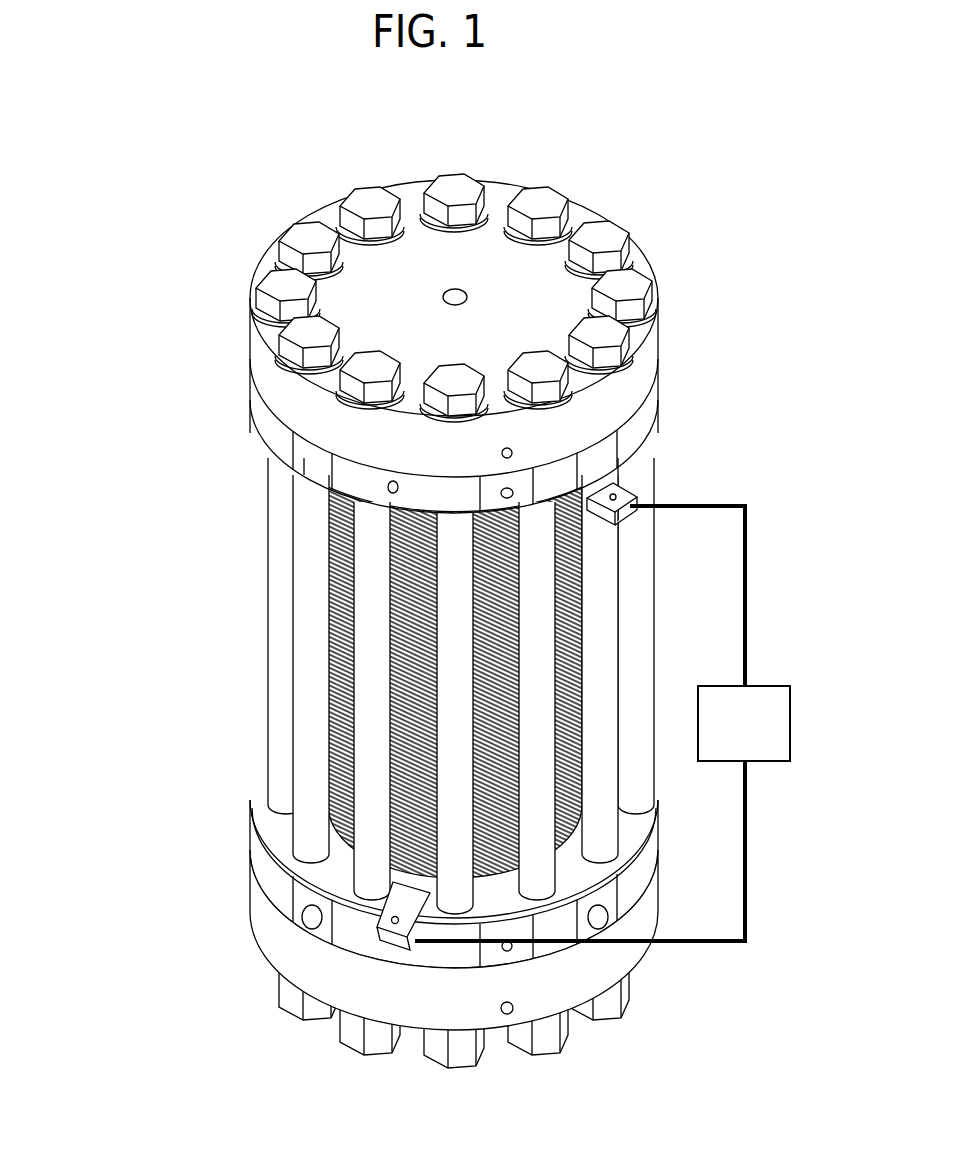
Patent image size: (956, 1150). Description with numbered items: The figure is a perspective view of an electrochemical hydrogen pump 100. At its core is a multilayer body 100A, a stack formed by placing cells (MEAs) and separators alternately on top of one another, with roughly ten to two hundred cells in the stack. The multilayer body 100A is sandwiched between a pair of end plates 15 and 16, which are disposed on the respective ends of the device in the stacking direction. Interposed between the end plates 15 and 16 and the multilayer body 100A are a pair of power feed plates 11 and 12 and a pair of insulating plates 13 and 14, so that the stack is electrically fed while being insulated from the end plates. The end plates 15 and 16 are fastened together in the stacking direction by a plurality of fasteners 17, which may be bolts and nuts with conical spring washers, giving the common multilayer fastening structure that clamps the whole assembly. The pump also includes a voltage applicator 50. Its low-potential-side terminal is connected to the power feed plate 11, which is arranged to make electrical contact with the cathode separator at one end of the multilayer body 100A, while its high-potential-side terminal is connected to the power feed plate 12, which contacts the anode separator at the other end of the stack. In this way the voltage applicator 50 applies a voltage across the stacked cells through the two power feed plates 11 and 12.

The electrochemical hydrogen pump 100 is at (138, 150).
The multilayer body 100A is at (330, 722).
The power feed plate 11 is at (633, 484).
The power feed plate 12 is at (377, 902).
The insulating plate 13 is at (256, 441).
The insulating plate 14 is at (286, 850).
The end plate 15 is at (632, 378).
The end plate 16 is at (292, 962).
The fasteners 17 is at (606, 228).
The voltage applicator 50 is at (766, 738).